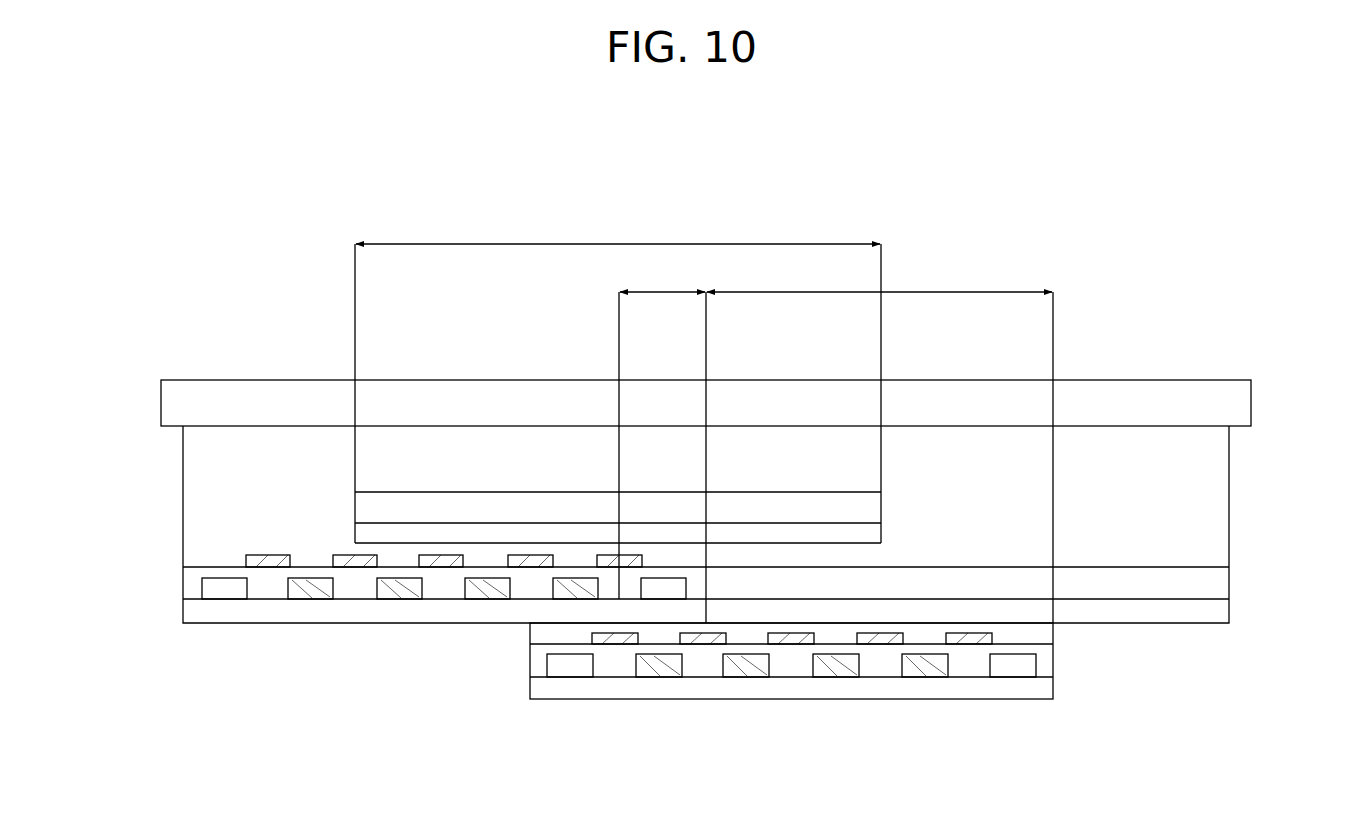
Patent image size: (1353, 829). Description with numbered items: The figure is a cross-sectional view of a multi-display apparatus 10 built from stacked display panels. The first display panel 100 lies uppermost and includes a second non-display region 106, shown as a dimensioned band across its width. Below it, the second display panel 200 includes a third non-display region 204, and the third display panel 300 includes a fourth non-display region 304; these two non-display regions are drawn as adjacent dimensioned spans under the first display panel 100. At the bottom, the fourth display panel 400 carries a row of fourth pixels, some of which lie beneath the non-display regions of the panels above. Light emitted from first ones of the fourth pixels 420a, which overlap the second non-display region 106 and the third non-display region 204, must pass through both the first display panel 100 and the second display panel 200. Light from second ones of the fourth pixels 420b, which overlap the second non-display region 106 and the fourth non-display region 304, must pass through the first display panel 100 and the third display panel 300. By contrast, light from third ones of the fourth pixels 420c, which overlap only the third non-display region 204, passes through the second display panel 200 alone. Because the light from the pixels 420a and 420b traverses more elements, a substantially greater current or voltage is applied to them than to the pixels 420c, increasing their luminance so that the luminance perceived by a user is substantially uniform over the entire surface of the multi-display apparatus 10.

The multi-display apparatus 10 is at (1193, 221).
The first display panel 100 is at (346, 496).
The second non-display region 106 is at (618, 298).
The second display panel 200 is at (1273, 646).
The third non-display region 204 is at (880, 443).
The third display panel 300 is at (139, 646).
The fourth non-display region 304 is at (662, 443).
The fourth display panel 400 is at (736, 703).
The first ones of the fourth pixels 420a is at (747, 677).
The second ones of the fourth pixels 420b is at (658, 677).
The third ones of the fourth pixels 420c is at (923, 677).